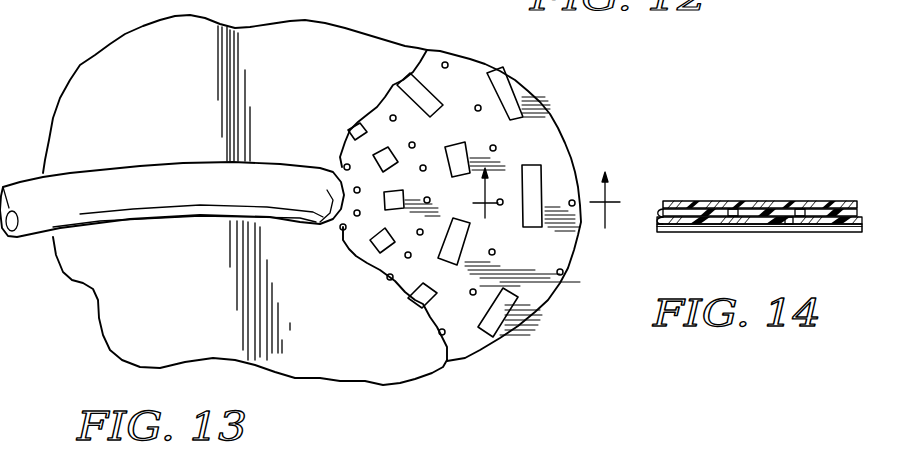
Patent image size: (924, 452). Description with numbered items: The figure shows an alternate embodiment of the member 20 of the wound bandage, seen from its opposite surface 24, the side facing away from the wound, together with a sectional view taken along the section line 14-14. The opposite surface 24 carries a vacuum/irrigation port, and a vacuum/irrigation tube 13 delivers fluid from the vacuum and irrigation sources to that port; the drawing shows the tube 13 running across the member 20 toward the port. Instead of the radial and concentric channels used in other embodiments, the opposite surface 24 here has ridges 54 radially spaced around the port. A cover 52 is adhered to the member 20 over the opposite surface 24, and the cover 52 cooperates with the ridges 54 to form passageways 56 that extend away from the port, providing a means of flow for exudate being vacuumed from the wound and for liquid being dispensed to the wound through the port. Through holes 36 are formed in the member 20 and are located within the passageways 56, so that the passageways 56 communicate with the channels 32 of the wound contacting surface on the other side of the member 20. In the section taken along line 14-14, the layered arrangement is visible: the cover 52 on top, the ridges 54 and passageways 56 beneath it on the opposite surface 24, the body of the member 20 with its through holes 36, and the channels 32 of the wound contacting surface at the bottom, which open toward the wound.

In FIG. 13, the vacuum/irrigation tube 13 is at (104, 193).
In FIG. 13, the member 20 is at (578, 137).
In FIG. 14, the member 20 is at (836, 198).
In FIG. 13, the opposite surface 24 is at (560, 177).
In FIG. 14, the channels 32 is at (683, 228).
In FIG. 13, the through holes 36 is at (480, 47).
In FIG. 14, the through holes 36 is at (790, 224).
In FIG. 13, the cover 52 is at (368, 48).
In FIG. 14, the cover 52 is at (685, 200).
In FIG. 13, the ridges 54 is at (503, 92).
In FIG. 14, the ridges 54 is at (753, 203).
In FIG. 14, the passageways 56 is at (808, 205).
In FIG. 13, the section line 14- 14 is at (548, 213).